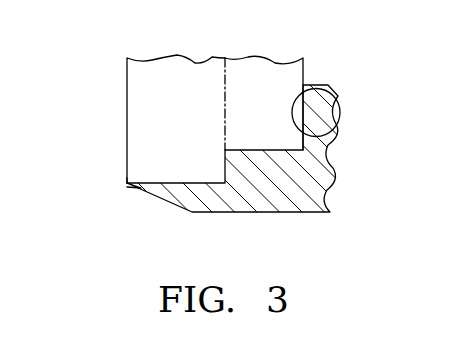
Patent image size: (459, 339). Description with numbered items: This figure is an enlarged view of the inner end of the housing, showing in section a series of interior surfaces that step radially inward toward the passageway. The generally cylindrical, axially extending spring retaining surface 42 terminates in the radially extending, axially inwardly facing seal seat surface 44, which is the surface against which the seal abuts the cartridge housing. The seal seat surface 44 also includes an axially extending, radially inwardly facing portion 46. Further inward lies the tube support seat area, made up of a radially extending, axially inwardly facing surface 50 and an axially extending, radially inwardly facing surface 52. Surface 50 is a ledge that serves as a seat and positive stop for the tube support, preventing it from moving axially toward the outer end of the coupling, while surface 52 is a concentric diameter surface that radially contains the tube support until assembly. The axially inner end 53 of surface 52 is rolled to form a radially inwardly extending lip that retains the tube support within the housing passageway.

The spring retaining surface 42 is at (311, 84).
The seal seat surface 44 is at (328, 113).
The axially extending, radially inwardly facing portion 46 is at (245, 150).
The radially extending, axially inwardly facing surface 50 is at (227, 159).
The axially extending, radially inwardly facing surface 52 is at (128, 183).
The axially inner end 53 is at (130, 179).